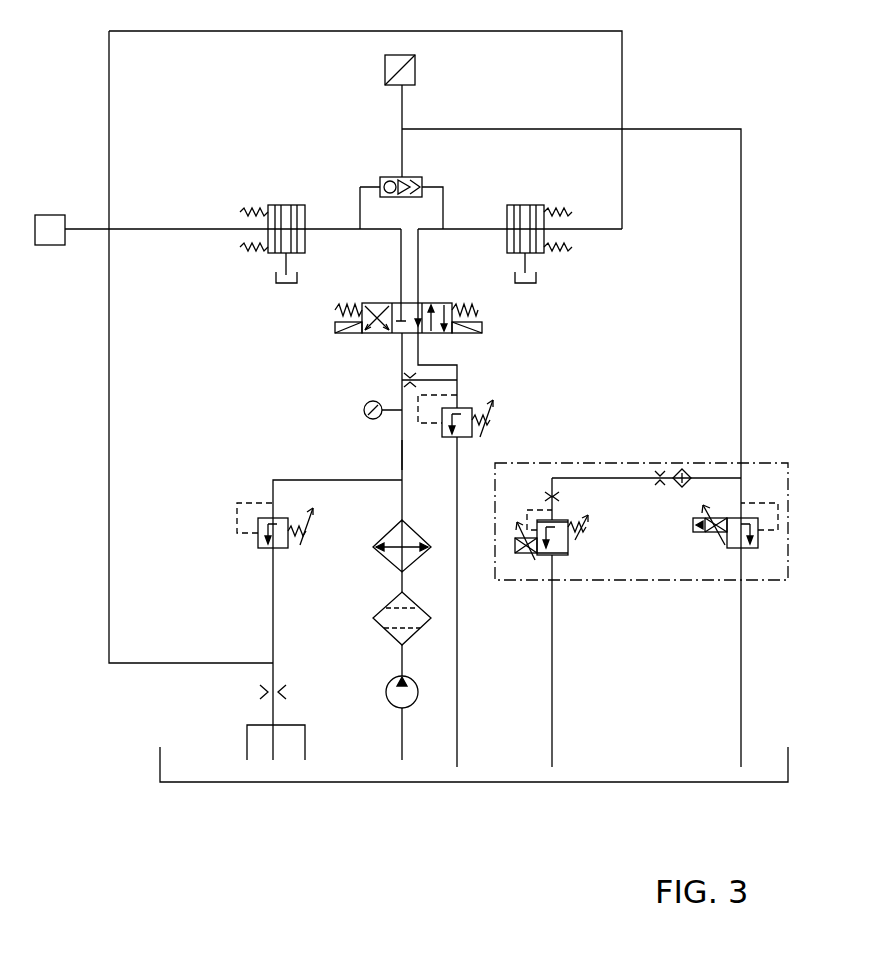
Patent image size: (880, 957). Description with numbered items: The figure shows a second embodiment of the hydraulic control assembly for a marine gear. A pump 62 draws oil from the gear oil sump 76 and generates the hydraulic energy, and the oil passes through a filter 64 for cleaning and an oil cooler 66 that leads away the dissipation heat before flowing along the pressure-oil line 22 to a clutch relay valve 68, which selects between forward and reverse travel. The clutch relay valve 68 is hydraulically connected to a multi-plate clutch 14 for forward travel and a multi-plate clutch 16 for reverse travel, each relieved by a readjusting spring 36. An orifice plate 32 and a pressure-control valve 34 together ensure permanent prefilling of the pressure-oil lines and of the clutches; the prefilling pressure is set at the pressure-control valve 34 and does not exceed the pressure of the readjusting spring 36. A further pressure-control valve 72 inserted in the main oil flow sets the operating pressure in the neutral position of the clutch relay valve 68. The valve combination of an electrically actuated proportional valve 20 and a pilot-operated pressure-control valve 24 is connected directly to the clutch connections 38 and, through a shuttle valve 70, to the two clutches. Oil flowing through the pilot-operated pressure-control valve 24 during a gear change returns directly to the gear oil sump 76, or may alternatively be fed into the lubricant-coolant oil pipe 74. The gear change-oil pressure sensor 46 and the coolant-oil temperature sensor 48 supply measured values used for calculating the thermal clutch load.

The multi-plate clutch 14 is at (523, 194).
The multi-plate clutch 16 is at (275, 195).
The proportional valve 20 is at (587, 560).
The pressure-oil line 22 is at (402, 452).
The pilot-operated pressure-control valve 24 is at (710, 552).
The orifice plate 32 is at (397, 366).
The pressure-control valve 34 is at (477, 399).
The readjusting spring 36 is at (573, 247).
The clutch connections 38 is at (450, 224).
The gear change-oil pressure sensor 46 is at (415, 70).
The coolant-oil temperature sensor 48 is at (46, 213).
The pump 62 is at (399, 696).
The filter 64 is at (392, 622).
The oil cooler 66 is at (393, 555).
The clutch relay valve 68 is at (430, 296).
The shuttle valve 70 is at (383, 170).
The pressure-control valve 72 is at (244, 554).
The lubricant-coolant oil pipe 74 is at (264, 663).
The gear oil sump 76 is at (404, 785).